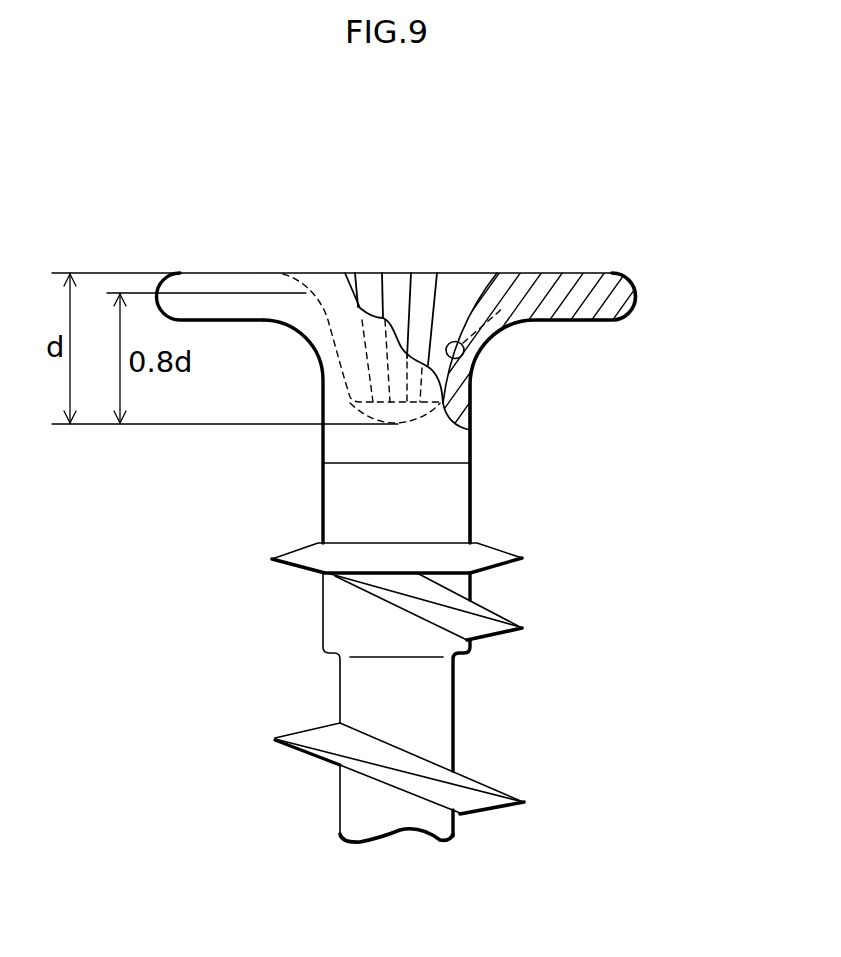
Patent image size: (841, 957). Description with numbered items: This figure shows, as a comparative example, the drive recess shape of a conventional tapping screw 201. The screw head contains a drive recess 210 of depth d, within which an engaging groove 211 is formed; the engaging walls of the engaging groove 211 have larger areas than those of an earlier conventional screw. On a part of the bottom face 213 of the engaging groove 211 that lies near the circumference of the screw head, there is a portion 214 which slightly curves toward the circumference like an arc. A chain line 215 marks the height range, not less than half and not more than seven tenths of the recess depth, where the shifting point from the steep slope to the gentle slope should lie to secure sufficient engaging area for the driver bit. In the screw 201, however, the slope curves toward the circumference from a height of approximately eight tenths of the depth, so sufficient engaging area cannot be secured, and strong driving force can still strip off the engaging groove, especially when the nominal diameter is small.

The tapping screw 201 is at (258, 528).
The drive recess 210 is at (398, 300).
The engaging groove 211 is at (450, 302).
The bottom face 213 is at (484, 345).
The portion 214 is at (497, 293).
The chain line 215 is at (532, 277).